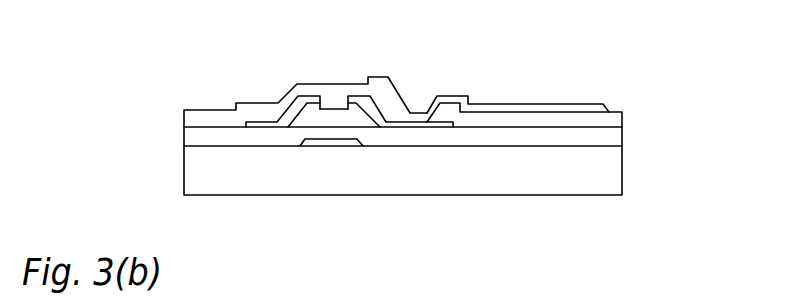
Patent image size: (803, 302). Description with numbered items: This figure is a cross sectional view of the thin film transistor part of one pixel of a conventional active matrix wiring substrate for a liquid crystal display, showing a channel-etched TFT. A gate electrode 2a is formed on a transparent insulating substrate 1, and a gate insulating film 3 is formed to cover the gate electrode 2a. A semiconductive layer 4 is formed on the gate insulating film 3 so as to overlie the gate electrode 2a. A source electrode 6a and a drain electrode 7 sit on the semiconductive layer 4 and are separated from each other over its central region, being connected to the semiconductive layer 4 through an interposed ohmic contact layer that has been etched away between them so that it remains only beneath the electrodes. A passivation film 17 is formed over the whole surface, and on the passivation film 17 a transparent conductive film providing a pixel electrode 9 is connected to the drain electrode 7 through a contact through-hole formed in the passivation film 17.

The transparent insulating substrate 1 is at (608, 165).
The gate electrode 2a is at (345, 150).
The gate insulating film 3 is at (609, 134).
The semiconductive layer 4 is at (333, 104).
The source electrode 6a is at (262, 130).
The drain electrode 7 is at (412, 130).
The pixel electrode 9 is at (493, 103).
The passivation film 17 is at (615, 110).